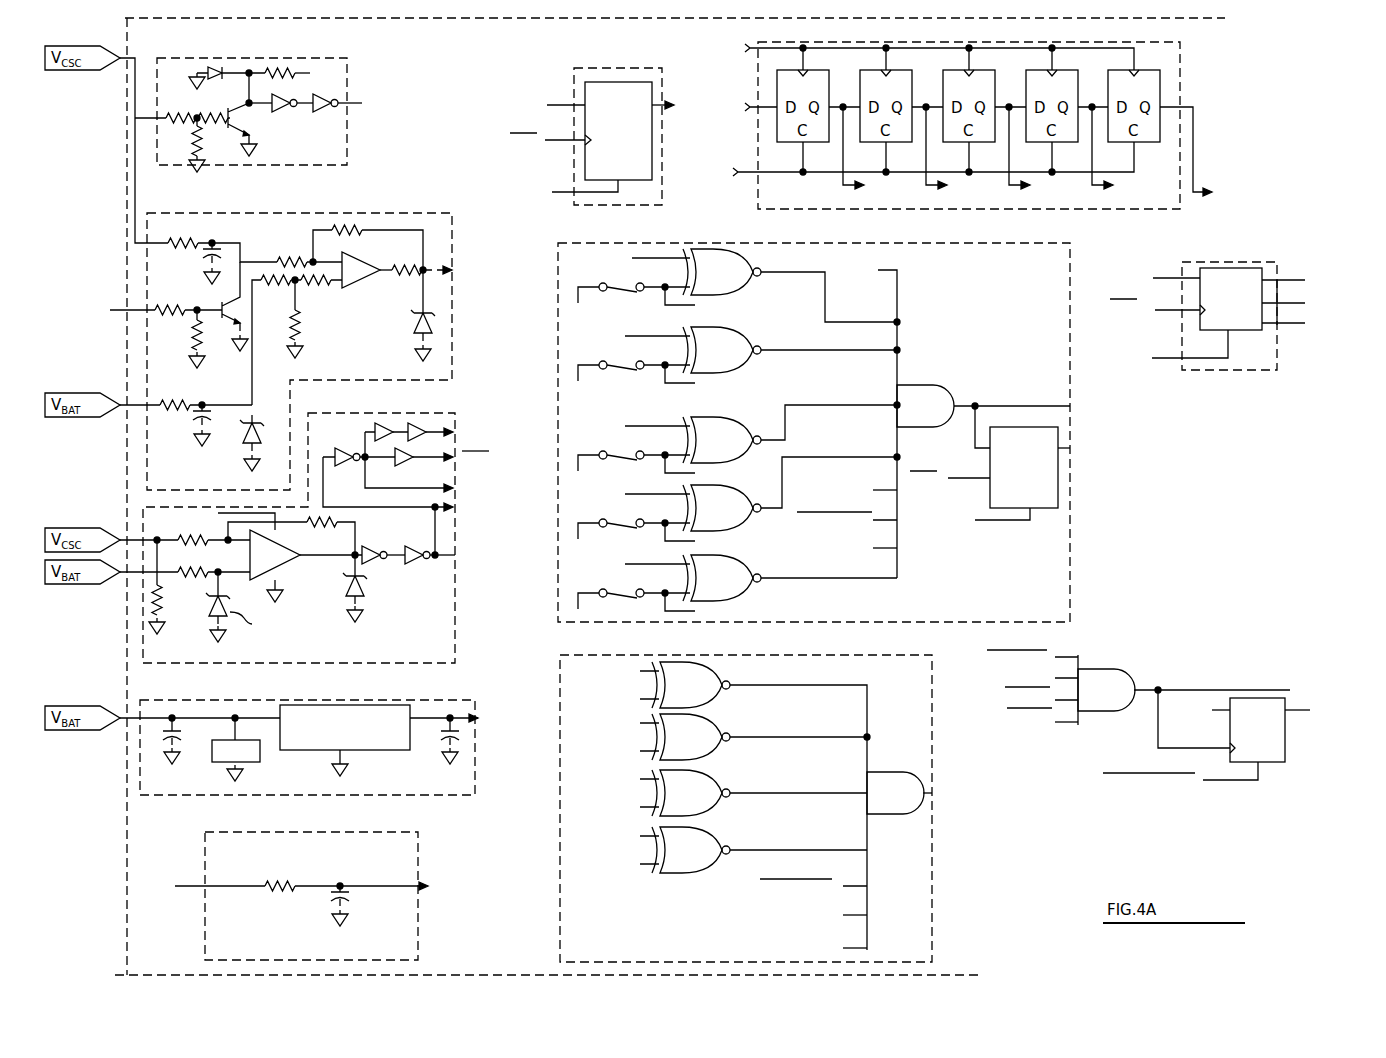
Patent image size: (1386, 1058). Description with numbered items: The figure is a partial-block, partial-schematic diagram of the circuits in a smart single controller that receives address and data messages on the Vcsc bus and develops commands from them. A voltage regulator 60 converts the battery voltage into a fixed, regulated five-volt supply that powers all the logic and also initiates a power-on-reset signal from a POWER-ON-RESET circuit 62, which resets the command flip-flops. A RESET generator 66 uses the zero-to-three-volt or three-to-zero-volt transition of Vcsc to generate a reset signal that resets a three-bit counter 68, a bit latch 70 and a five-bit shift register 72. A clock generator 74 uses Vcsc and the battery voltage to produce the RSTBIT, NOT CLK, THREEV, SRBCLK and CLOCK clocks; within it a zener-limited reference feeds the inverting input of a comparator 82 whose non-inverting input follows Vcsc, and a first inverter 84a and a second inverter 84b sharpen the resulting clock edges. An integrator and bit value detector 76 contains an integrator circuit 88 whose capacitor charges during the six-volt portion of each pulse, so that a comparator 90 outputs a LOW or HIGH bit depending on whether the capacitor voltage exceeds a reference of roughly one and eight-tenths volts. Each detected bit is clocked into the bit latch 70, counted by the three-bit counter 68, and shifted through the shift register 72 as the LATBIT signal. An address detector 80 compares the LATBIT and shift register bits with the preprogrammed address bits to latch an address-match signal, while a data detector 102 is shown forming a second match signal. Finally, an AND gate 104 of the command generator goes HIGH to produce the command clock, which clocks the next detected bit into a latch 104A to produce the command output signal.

The voltage regulator 60 is at (434, 708).
The POWER-ON-RESET circuit 62 is at (418, 855).
The RESET generator 66 is at (347, 76).
The three-bit counter 68 is at (1277, 268).
The bit latch 70 is at (574, 74).
The five-bit shift register 72 is at (1180, 74).
The clock generator 74 is at (326, 524).
The integrator and bit value detector 76 is at (273, 339).
The address detector 80 is at (1000, 243).
The comparator 82 is at (291, 560).
The first inverter 84a is at (375, 548).
The second inverter 84b is at (412, 572).
The integrator circuit 88 is at (198, 262).
The comparator 90 is at (348, 268).
The data detector 102 is at (900, 655).
The AND gate 104 is at (1110, 670).
The latch 104A is at (1285, 748).